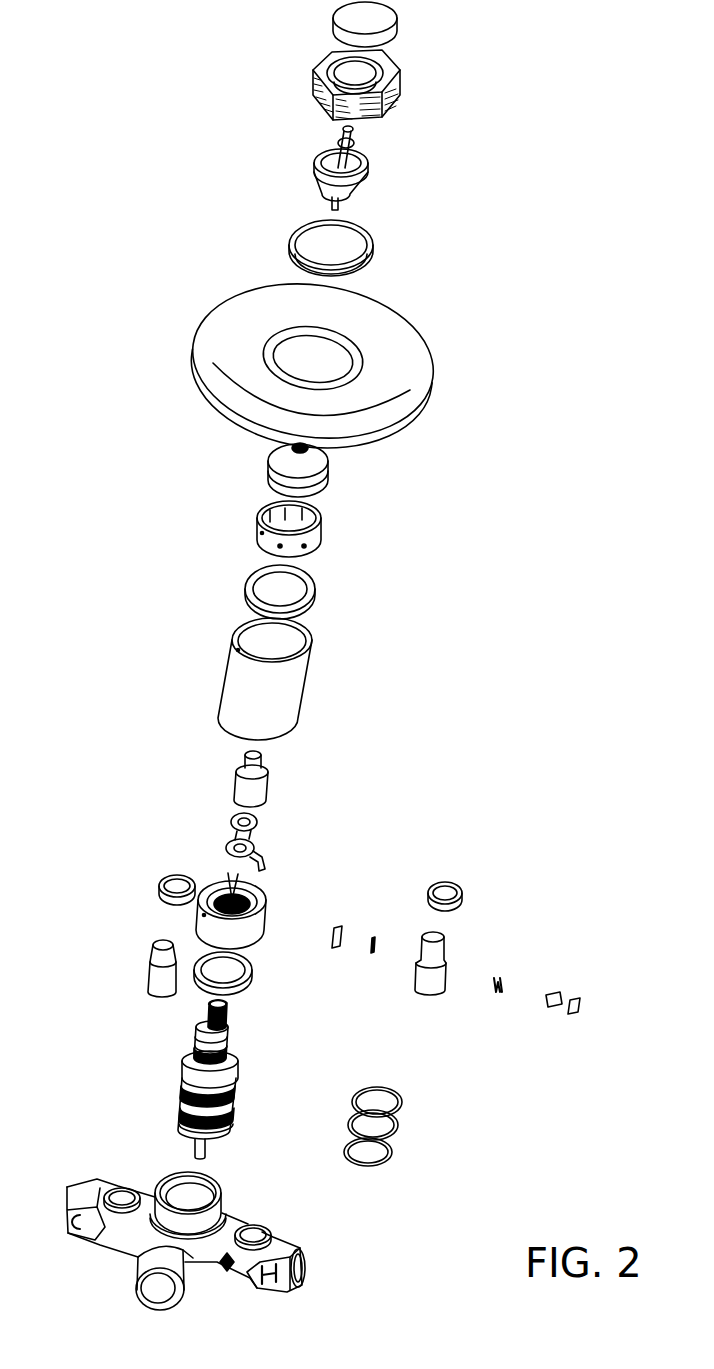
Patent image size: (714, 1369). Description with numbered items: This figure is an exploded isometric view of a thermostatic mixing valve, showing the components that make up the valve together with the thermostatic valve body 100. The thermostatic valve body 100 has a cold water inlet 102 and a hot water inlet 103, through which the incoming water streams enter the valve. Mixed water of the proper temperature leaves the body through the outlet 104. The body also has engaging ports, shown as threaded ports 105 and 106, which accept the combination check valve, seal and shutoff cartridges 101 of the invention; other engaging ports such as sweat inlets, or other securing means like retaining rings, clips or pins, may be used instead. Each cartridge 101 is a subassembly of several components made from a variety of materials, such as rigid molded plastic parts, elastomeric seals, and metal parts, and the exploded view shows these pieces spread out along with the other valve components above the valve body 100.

The thermostatic valve body 100 is at (362, 534).
The combination check valve, seal and shutoff cartridge 101 is at (586, 947).
The cold water inlet 102 is at (70, 1190).
The hot water inlet 103 is at (300, 1262).
The outlet 104 is at (230, 1216).
The threaded port 105 is at (128, 1180).
The threaded port 106 is at (258, 1232).